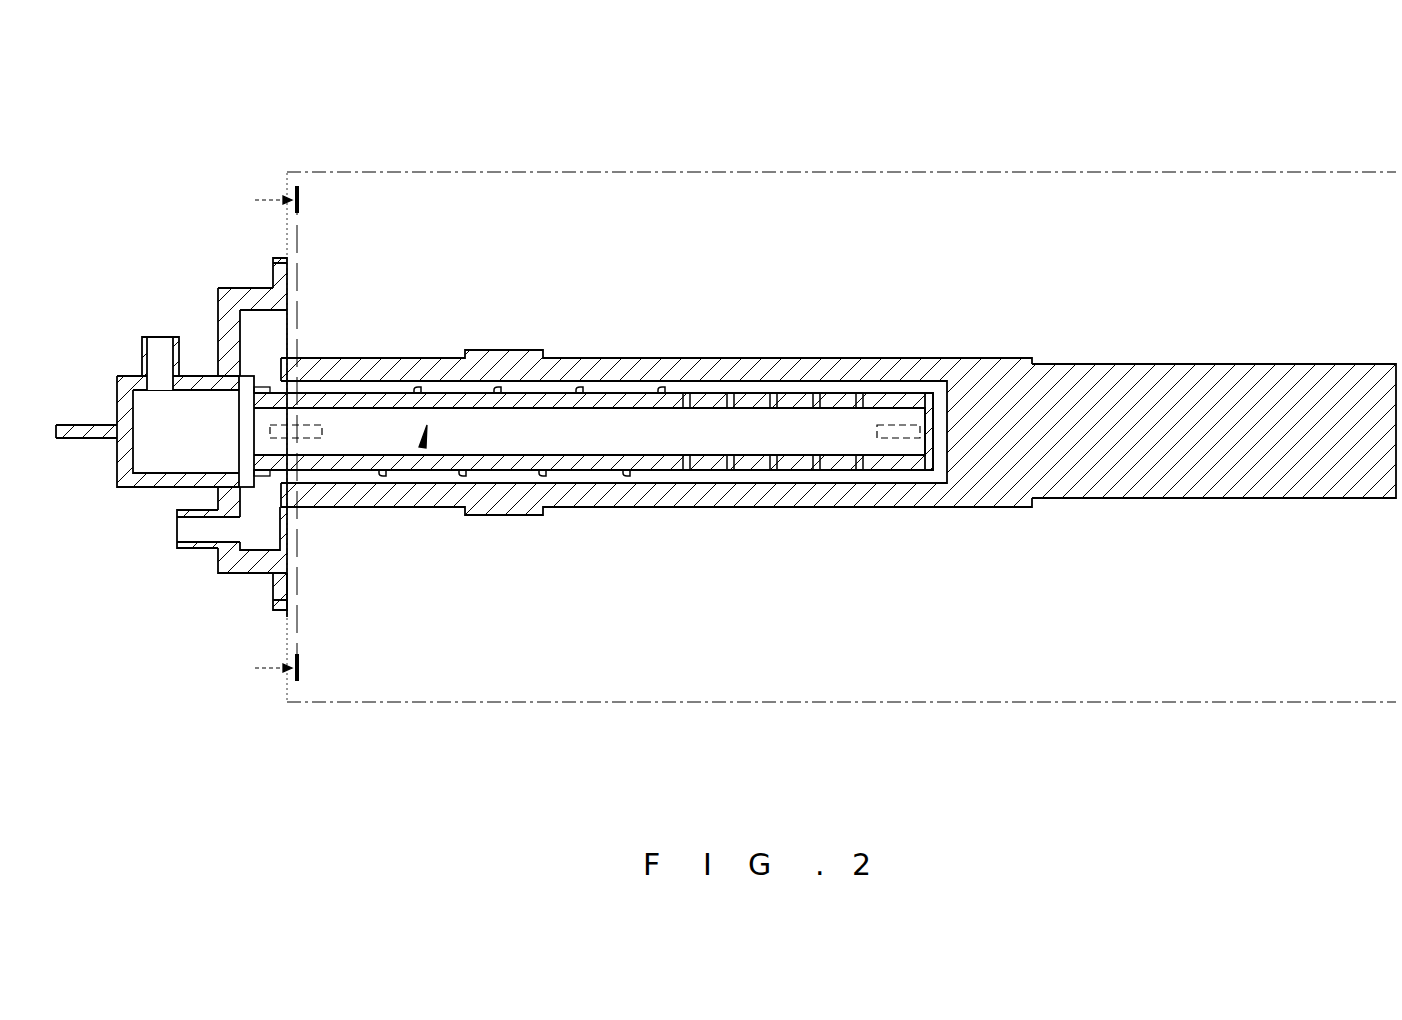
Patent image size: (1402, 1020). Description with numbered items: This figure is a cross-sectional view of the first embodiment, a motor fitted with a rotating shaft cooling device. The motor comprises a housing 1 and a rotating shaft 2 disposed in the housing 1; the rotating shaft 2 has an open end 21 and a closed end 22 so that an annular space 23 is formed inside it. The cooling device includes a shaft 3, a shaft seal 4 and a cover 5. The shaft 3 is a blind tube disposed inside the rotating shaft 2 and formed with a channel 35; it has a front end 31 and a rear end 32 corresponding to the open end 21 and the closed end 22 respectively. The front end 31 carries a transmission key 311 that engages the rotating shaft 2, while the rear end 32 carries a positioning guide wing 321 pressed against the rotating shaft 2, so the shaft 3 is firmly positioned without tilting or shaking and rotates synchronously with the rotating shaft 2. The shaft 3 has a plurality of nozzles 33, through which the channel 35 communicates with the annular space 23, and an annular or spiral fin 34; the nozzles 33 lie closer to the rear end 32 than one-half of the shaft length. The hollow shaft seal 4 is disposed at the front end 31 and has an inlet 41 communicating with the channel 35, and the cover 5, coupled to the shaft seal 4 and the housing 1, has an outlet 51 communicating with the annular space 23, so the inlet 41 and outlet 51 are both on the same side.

The housing 1 is at (470, 172).
The rotating shaft 2 is at (1094, 405).
The open end 21 is at (280, 487).
The closed end 22 is at (980, 405).
The annular space 23 is at (754, 392).
The shaft 3 is at (572, 472).
The front end 31 is at (253, 403).
The transmission key 311 is at (273, 413).
The rear end 32 is at (922, 472).
The positioning guide wing 321 is at (893, 440).
The nozzles 33 is at (772, 462).
The fin 34 is at (627, 478).
The channel 35 is at (422, 447).
The shaft seal 4 is at (117, 410).
The inlet 41 is at (158, 337).
The cover 5 is at (228, 565).
The outlet 51 is at (177, 528).